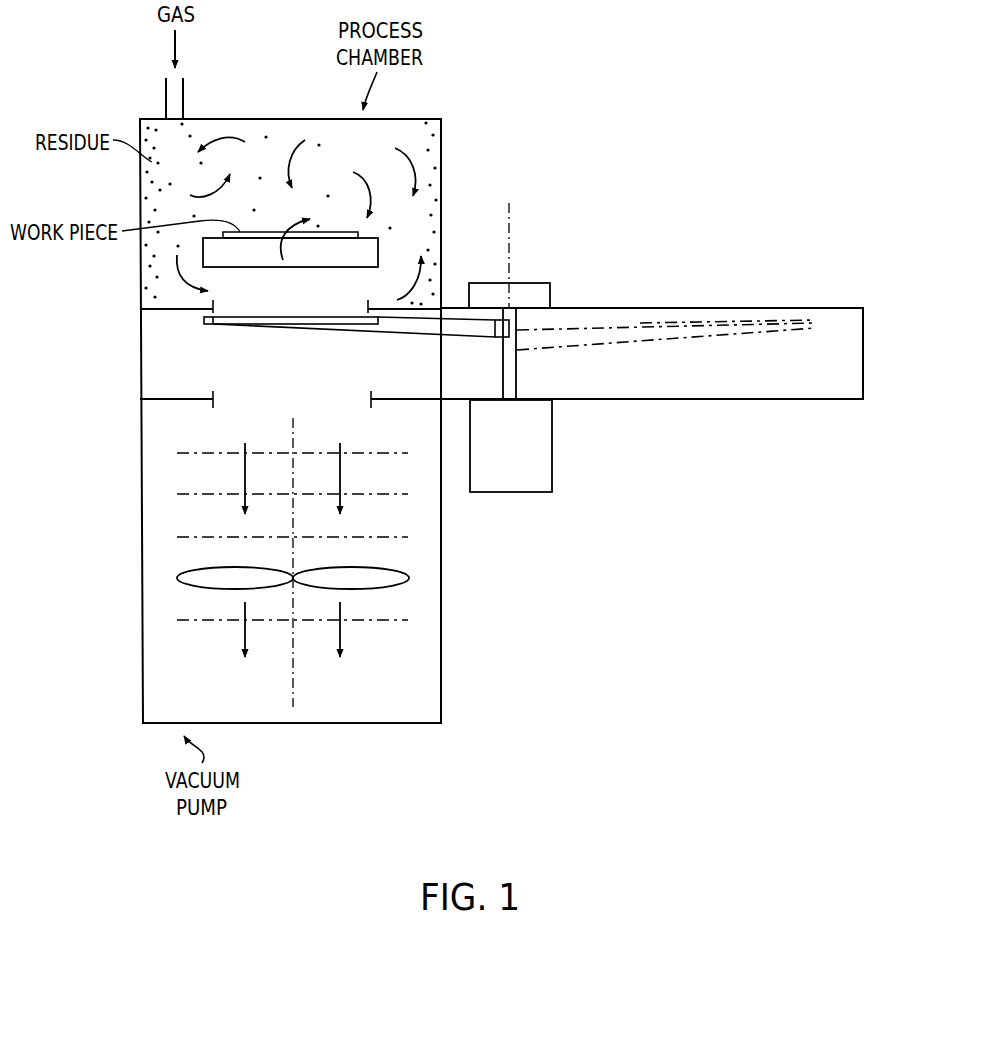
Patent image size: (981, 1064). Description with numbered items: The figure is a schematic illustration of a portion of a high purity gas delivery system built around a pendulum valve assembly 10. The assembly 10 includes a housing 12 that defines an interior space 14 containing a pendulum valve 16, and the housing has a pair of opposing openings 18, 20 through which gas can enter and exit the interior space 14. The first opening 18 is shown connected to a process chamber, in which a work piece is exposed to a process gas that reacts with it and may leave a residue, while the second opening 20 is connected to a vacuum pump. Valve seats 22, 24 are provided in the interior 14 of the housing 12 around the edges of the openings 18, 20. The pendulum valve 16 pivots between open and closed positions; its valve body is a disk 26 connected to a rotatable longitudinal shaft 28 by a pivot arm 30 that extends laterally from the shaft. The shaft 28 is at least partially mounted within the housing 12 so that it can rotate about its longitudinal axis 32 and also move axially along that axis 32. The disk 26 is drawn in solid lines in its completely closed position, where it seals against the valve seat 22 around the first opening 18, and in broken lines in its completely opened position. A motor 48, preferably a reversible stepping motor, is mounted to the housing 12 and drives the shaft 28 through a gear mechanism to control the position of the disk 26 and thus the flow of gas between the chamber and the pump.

The pendulum valve assembly 10 is at (716, 266).
The housing 12 is at (747, 399).
The interior space 14 is at (290, 345).
The pendulum valve 16 is at (502, 327).
The first opening 18 is at (215, 309).
The second opening 20 is at (213, 400).
The valve seat 22 is at (368, 309).
The valve seat 24 is at (371, 400).
The disk 26 is at (213, 325).
The longitudinal shaft 28 is at (516, 376).
The pivot arm 30 is at (428, 334).
The longitudinal axis 32 is at (510, 222).
The motor 48 is at (541, 461).